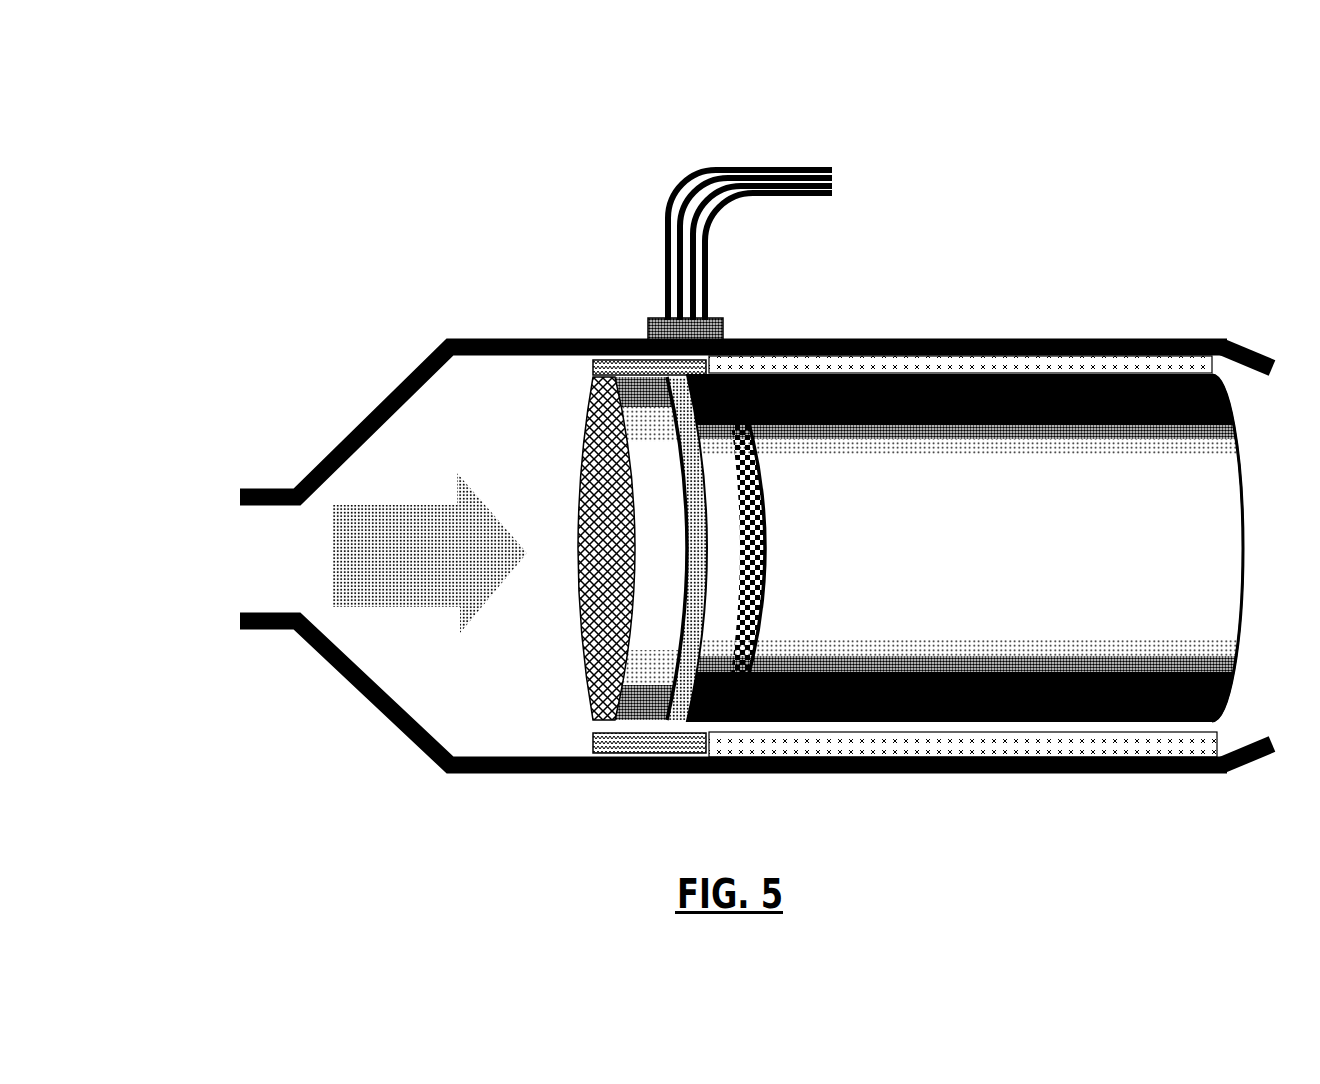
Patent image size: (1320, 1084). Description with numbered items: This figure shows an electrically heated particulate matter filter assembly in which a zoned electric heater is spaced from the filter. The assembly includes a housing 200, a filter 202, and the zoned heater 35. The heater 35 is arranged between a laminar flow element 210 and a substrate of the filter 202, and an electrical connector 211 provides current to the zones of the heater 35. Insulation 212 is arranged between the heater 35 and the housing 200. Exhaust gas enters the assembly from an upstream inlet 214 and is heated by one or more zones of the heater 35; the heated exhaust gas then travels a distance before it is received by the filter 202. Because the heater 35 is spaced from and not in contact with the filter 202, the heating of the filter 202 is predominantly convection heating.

The housing 200 is at (945, 339).
The filter 202 is at (868, 542).
The laminar flow element 210 is at (633, 387).
The electrical connector 211 is at (958, 168).
The insulation 212 is at (593, 368).
The zoned heater 35 is at (603, 505).
The upstream inlet 214 is at (243, 560).